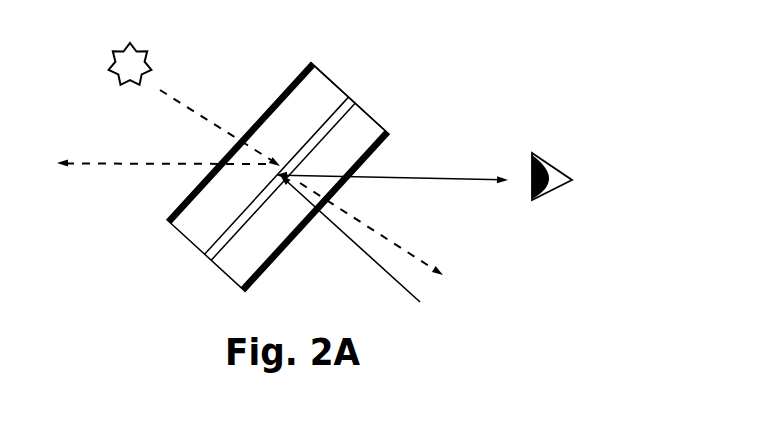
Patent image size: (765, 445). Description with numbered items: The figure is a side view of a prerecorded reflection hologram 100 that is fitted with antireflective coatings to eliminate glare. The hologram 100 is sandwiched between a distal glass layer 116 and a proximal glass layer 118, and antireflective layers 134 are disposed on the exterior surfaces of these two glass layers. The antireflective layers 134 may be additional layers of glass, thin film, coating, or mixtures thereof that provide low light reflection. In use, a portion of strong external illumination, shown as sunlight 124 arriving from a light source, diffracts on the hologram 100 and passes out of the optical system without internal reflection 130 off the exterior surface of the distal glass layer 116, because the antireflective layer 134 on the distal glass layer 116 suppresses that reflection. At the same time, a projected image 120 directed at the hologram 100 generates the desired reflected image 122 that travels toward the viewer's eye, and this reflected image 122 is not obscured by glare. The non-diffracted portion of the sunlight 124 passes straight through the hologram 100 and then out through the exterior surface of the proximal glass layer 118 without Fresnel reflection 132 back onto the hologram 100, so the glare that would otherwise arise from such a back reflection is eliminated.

The reflection hologram 100 is at (207, 257).
The distal glass layer 116 is at (325, 84).
The proximal glass layer 118 is at (260, 253).
The projected image 120 is at (375, 250).
The reflected image 122 is at (473, 182).
The sunlight 124 is at (213, 122).
The internal reflection 130 is at (123, 168).
The Fresnel reflection 132 is at (402, 249).
The antireflective layers 134 is at (300, 71).